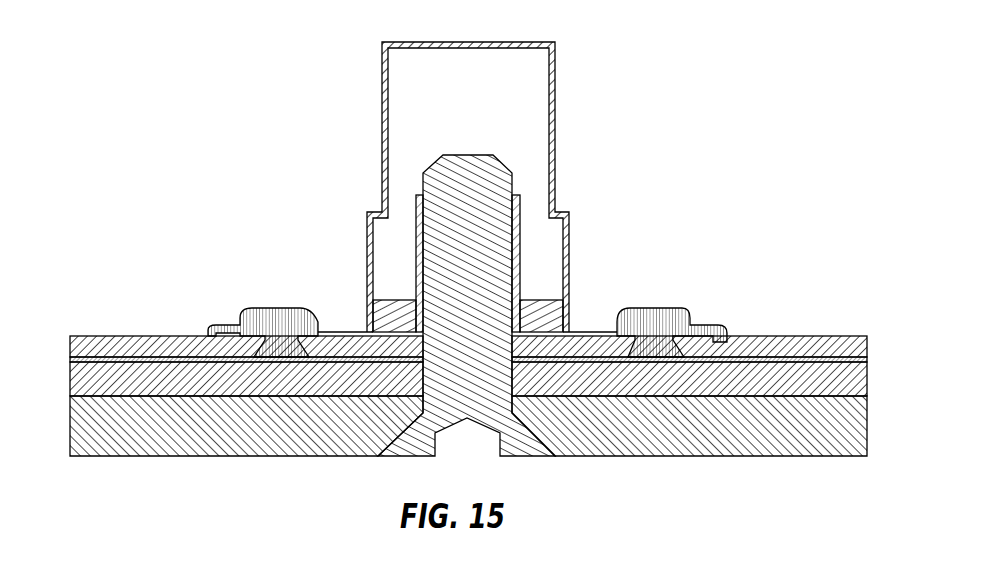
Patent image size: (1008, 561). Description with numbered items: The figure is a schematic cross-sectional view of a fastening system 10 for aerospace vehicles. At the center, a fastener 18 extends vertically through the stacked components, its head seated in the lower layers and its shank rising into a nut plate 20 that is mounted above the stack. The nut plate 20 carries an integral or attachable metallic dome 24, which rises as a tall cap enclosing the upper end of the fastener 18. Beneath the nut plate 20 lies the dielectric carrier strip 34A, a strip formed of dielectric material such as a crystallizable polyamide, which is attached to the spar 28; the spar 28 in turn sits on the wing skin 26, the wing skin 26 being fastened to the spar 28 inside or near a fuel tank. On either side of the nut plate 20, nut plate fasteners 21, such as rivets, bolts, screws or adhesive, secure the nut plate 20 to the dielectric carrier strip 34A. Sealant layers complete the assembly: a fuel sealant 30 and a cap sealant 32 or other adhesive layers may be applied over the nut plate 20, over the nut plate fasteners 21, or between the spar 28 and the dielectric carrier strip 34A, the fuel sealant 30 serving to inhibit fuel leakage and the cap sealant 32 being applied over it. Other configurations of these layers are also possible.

The fastening system 10 is at (126, 70).
The fastener 18 is at (484, 260).
The nut plate 20 is at (568, 297).
The nut plate fastener 21 is at (288, 326).
The metallic dome 24 is at (382, 125).
The wing skin 26 is at (867, 425).
The spar 28 is at (867, 378).
The fuel sealant 30 is at (70, 358).
The cap sealant 32 is at (660, 308).
The dielectric carrier strip 34A is at (796, 336).